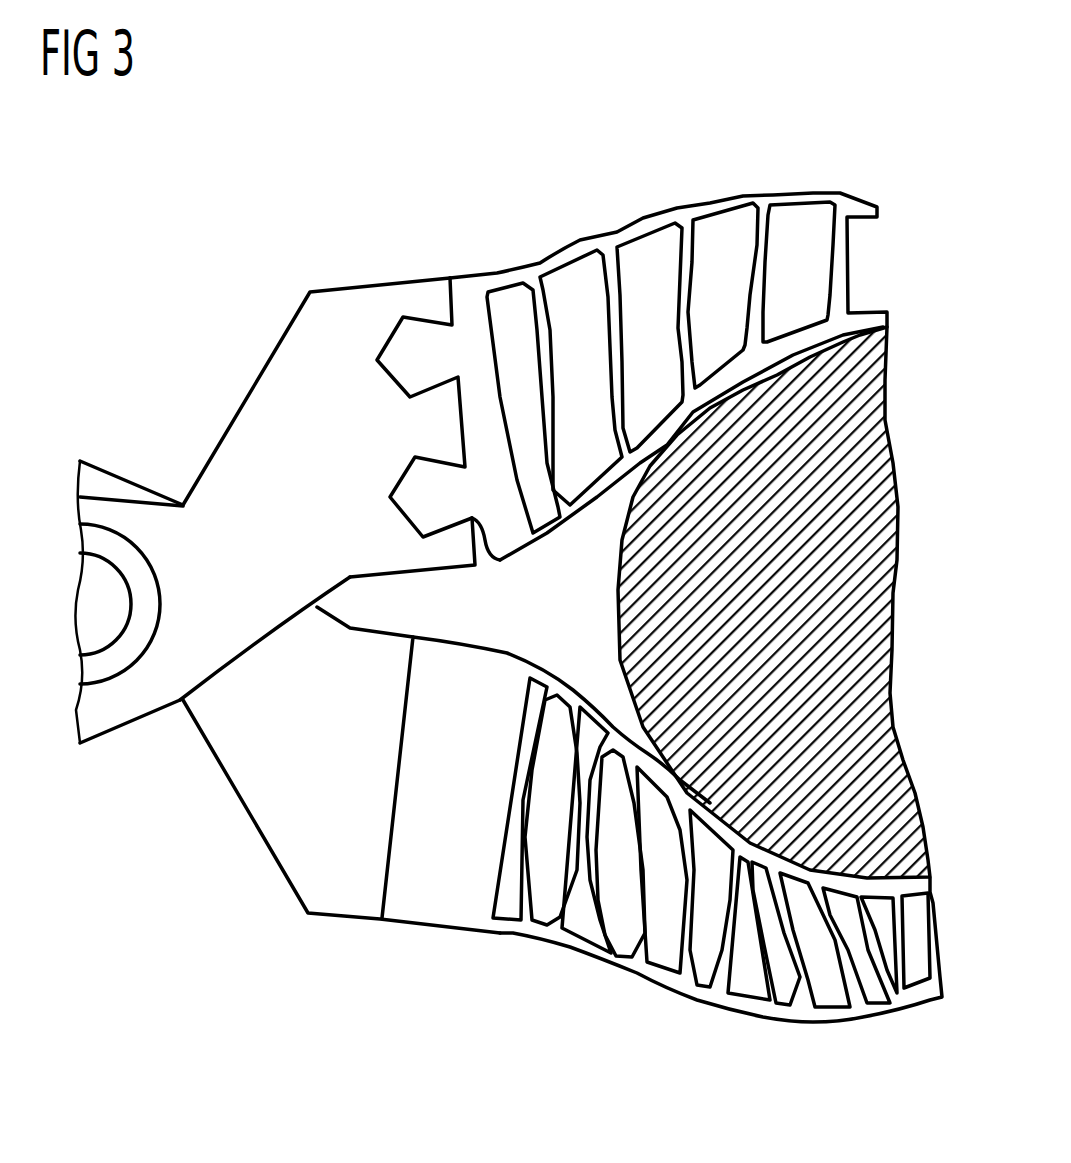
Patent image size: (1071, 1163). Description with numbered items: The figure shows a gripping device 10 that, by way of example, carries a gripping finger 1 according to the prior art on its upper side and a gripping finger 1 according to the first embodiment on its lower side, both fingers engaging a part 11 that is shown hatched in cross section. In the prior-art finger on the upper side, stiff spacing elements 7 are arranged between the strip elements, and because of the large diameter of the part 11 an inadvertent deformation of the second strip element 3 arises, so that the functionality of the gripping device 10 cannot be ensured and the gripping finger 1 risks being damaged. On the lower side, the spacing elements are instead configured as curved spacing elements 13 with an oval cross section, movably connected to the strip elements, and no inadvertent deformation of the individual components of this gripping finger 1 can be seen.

The gripping finger 1 is at (832, 158).
The second strip element 3 is at (745, 192).
The spacing elements 7 is at (541, 307).
The gripping device 10 is at (318, 262).
The part 11 is at (888, 455).
The curved spacing elements 13 is at (652, 945).